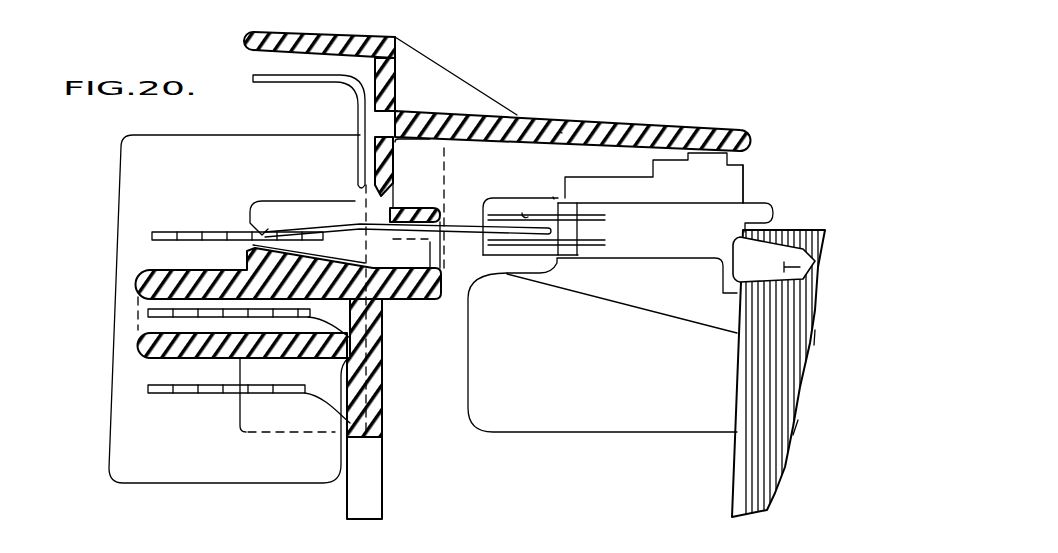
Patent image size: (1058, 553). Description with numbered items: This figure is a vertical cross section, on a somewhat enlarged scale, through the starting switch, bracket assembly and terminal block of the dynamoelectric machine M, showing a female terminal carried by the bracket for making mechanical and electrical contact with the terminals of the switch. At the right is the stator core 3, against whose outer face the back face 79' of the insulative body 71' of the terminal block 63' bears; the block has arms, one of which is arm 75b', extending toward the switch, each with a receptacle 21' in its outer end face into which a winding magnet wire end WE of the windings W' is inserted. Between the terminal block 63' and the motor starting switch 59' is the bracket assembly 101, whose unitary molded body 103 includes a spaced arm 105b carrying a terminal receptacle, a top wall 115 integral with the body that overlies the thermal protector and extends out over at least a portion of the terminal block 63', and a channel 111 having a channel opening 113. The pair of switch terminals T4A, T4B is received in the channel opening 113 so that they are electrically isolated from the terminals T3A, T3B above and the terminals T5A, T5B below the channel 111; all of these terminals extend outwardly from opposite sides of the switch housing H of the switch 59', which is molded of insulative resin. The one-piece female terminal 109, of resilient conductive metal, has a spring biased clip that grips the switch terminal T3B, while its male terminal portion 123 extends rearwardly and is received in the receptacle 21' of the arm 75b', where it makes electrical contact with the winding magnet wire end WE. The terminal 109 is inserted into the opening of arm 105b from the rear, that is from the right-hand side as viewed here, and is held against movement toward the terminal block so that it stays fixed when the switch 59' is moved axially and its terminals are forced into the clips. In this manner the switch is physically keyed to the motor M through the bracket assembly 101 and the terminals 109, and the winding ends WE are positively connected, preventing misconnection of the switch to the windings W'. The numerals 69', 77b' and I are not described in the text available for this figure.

The resilient contact arm 69' is at (270, 102).
The unitary body 103 is at (433, 121).
The top wall 115 is at (487, 113).
The receptacle 21' is at (539, 142).
The arm 75b' is at (591, 133).
The winding magnet wire ends WE is at (560, 132).
The bracket assembly 101 is at (681, 114).
The insulative body 71' is at (780, 177).
The terminal block 63' is at (799, 199).
The back face 79' is at (804, 239).
The clamp tab 77b' is at (845, 253).
The core 3 is at (792, 309).
The dynamoelectric machine M is at (830, 340).
The insertion direction I is at (815, 425).
The female terminal 109 is at (272, 220).
The spaced arm 105b is at (278, 197).
The terminal T3B is at (348, 189).
The terminal T3A is at (155, 232).
The channel 111 is at (165, 270).
The male terminal portion 123 is at (455, 227).
The terminal T4A is at (157, 307).
The channel opening 113 is at (148, 332).
The terminal T4B is at (350, 338).
The terminal T5A is at (160, 383).
The terminal T5B is at (350, 423).
The motor starting switch 59' is at (275, 327).
The housing H is at (273, 450).
The windings W' is at (602, 381).